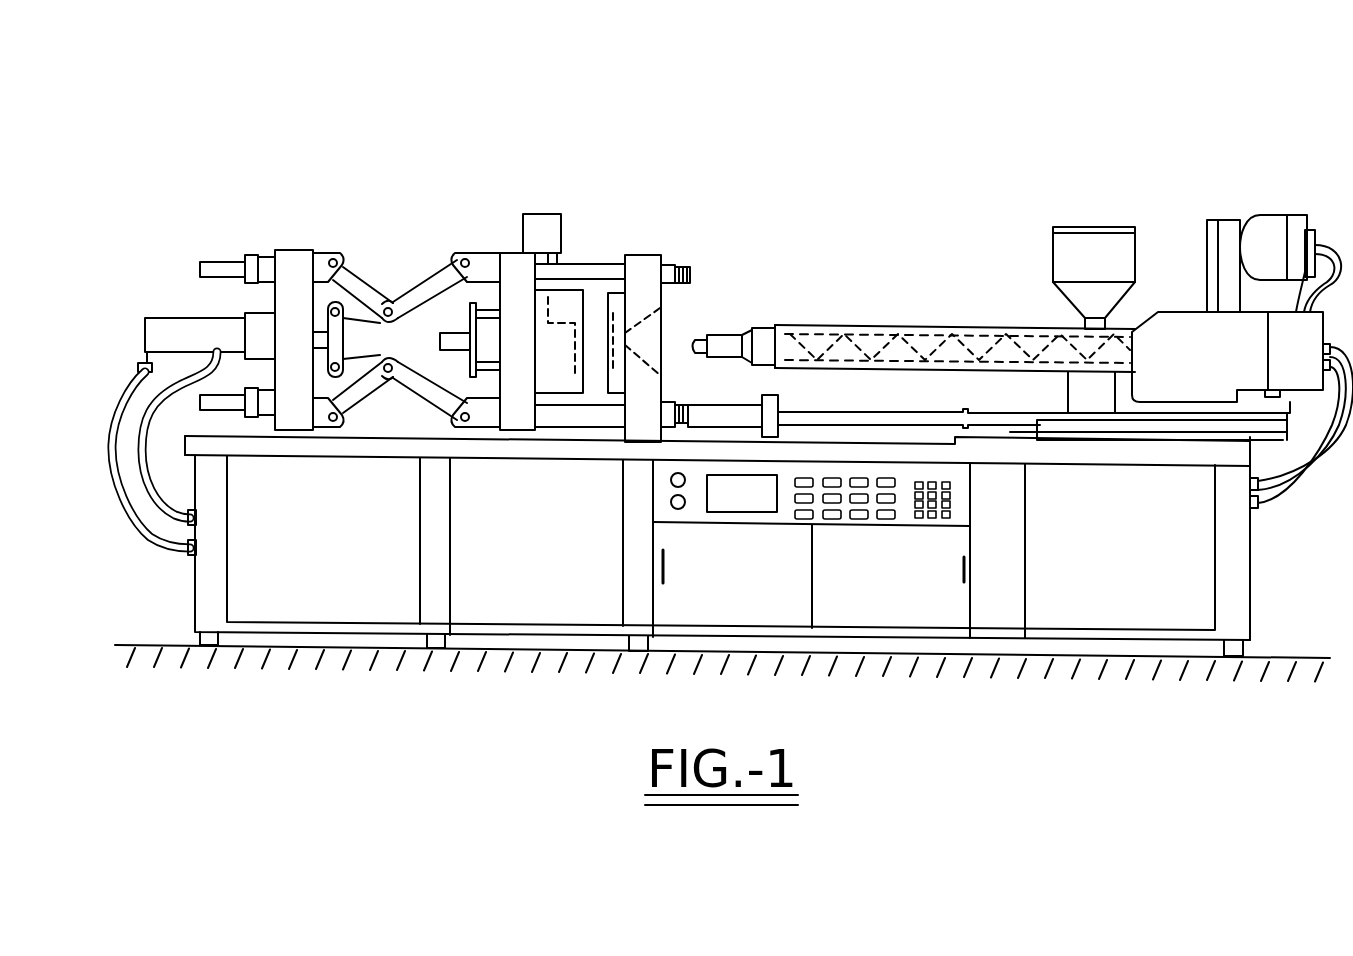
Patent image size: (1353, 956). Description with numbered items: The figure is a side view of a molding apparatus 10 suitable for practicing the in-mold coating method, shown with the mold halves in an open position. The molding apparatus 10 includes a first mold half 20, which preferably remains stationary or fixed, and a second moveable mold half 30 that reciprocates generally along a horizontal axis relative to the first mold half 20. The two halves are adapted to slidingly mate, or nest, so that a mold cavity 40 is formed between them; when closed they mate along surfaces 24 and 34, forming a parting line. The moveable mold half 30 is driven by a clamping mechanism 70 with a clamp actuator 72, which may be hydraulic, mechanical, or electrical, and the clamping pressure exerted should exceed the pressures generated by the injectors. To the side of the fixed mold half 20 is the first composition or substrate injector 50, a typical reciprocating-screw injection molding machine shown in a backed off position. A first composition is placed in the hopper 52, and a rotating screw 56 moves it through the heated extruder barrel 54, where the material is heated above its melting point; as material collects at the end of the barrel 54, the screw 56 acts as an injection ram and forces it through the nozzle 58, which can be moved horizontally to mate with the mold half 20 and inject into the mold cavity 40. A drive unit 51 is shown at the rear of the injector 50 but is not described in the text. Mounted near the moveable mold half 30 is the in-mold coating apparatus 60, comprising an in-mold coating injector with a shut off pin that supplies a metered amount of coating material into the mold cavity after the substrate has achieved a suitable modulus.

The molding apparatus 10 is at (575, 148).
The first mold half 20 is at (650, 253).
The mating surface of first mold half 24 is at (598, 365).
The second moveable mold half 30 is at (510, 252).
The mating surface of second mold half 34 is at (594, 297).
The mold cavity 40 is at (597, 372).
The first composition injector 50 is at (957, 315).
The screw drive motor 51 is at (1270, 215).
The hopper 52 is at (1053, 227).
The heated extruder barrel 54 is at (900, 325).
The rotating screw 56 is at (897, 360).
The nozzle 58 is at (689, 345).
The in-mold coating apparatus 60 is at (535, 213).
The clamping mechanism 70 is at (303, 247).
The clamp actuator 72 is at (182, 327).